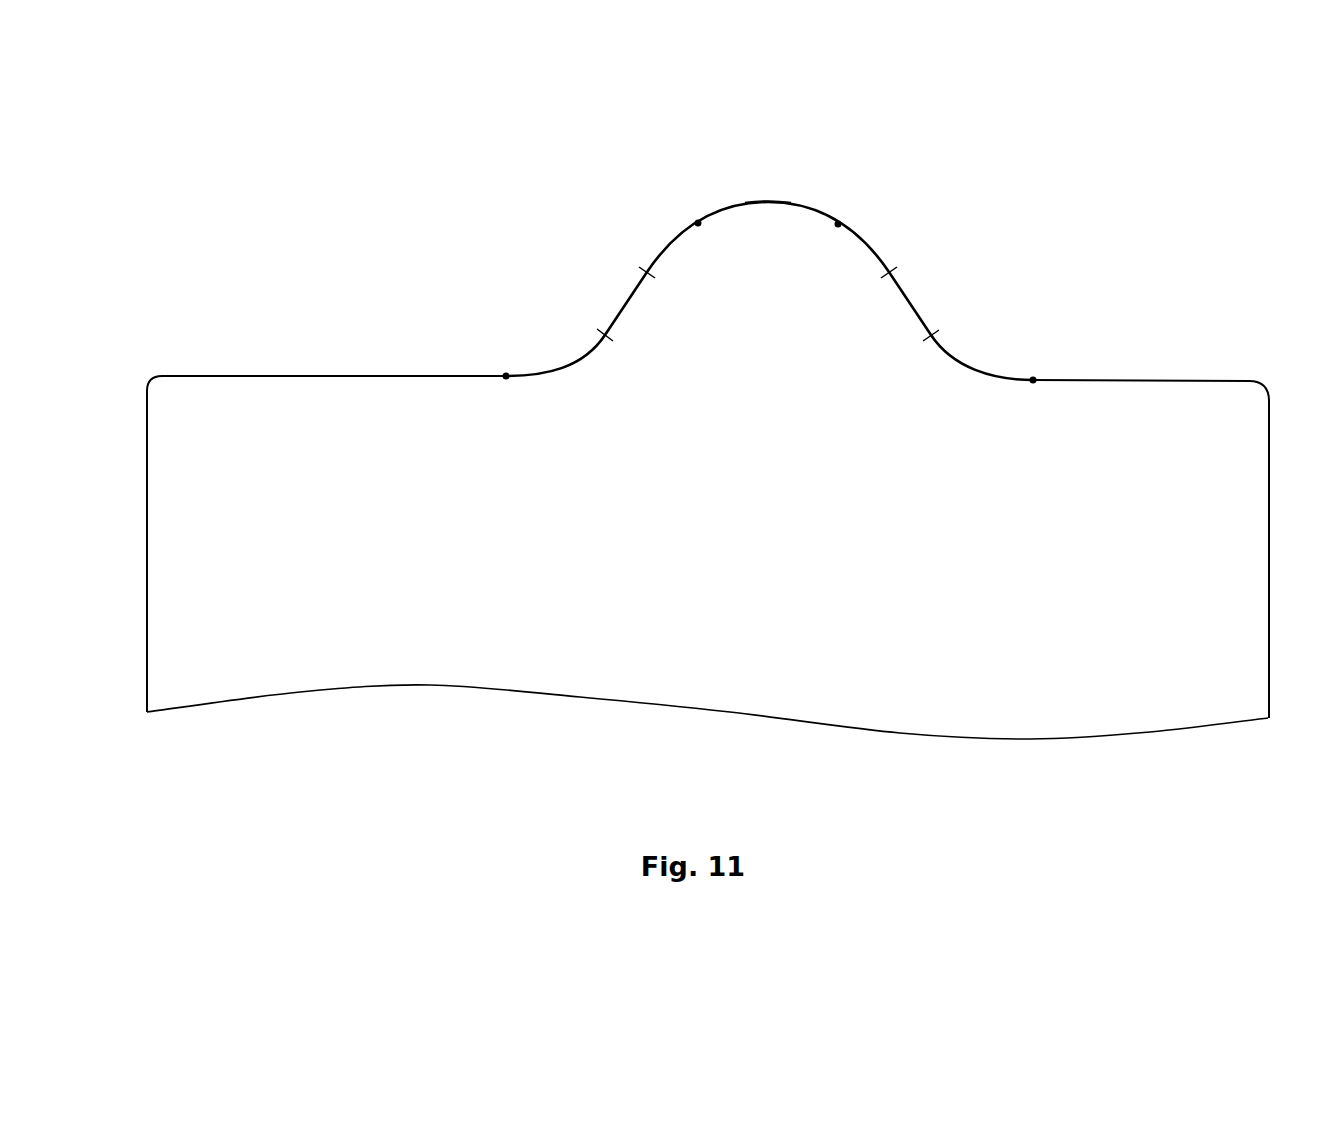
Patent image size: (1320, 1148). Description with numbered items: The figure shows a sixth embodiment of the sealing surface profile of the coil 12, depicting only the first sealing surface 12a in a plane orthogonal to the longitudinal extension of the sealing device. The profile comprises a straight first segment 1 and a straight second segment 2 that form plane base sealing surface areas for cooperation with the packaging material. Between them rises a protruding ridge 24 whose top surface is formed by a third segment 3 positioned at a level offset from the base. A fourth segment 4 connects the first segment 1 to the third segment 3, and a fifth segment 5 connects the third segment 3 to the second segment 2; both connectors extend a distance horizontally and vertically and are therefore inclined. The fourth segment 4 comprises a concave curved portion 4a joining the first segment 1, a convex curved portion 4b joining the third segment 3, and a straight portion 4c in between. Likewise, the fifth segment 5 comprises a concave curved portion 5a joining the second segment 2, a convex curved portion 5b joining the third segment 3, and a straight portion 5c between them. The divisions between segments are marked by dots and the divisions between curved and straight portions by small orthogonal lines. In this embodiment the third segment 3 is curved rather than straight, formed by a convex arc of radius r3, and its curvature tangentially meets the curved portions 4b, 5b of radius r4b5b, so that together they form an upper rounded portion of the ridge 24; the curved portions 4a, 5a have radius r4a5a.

The first segment 1 is at (273, 376).
The second segment 2 is at (1170, 380).
The third segment 3 is at (780, 202).
The fourth segment 4 is at (636, 276).
The curved portion 4a is at (577, 355).
The curved portion 4b is at (677, 235).
The straight portion 4c is at (610, 322).
The fifth segment 5 is at (940, 290).
The curved portion 5a is at (1002, 380).
The curved portion 5b is at (873, 250).
The straight portion 5c is at (898, 287).
The coil 12 is at (708, 511).
The first sealing surface 12a is at (386, 376).
The protruding ridge 24 is at (978, 212).
The radius of the third segment r3 is at (766, 206).
The radius of the curved portions connecting to the third segment r4b5b is at (865, 247).
The radius of the curved portions connecting to the first and second segments r4a5a is at (972, 365).